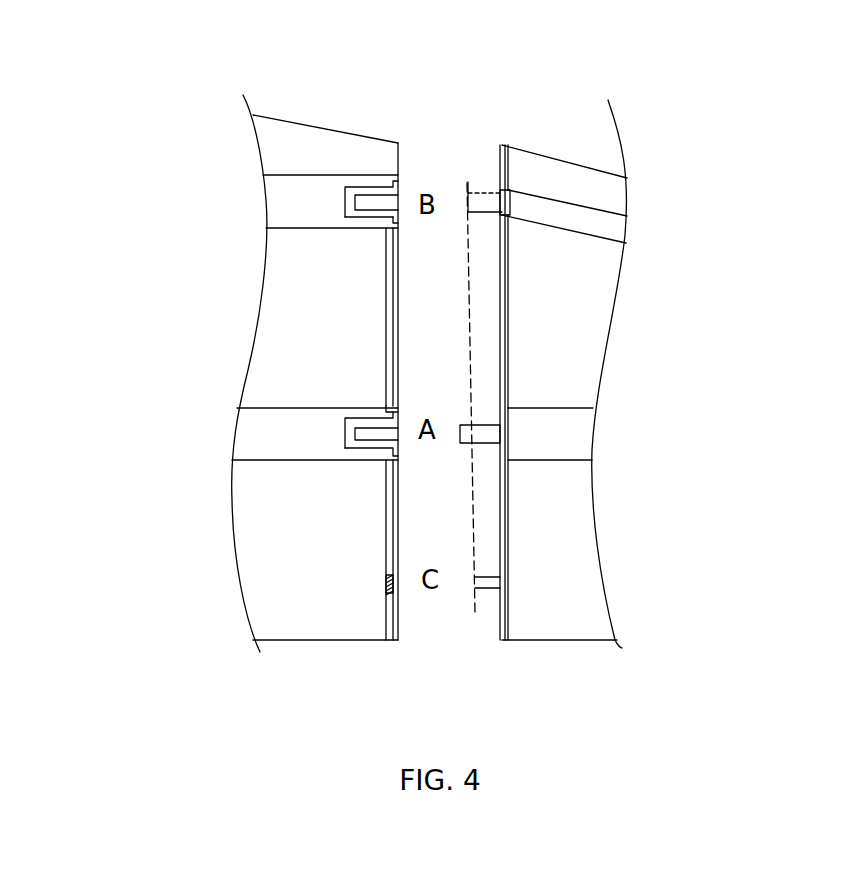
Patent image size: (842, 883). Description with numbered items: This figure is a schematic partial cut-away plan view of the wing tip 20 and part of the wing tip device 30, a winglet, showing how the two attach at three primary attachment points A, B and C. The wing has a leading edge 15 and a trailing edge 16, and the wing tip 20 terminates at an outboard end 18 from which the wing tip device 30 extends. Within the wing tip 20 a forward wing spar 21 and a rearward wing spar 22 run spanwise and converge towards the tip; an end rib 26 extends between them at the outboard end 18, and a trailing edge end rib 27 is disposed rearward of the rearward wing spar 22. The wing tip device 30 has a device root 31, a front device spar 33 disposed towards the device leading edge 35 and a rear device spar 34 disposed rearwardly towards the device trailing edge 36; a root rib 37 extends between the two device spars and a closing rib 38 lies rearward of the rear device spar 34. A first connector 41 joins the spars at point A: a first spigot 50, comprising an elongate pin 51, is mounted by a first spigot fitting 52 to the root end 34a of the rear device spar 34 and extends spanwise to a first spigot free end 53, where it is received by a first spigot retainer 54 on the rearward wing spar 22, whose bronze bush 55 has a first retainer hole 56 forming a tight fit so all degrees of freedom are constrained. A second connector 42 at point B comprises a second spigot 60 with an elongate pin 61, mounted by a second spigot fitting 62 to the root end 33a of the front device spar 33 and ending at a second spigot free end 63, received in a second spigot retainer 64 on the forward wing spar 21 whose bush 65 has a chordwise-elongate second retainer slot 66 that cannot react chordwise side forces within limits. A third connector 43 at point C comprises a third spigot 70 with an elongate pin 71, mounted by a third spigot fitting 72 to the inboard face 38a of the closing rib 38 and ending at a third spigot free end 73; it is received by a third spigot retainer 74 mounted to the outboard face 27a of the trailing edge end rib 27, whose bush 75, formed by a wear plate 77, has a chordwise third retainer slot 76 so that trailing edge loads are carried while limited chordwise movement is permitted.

The leading edge 15 is at (290, 118).
The trailing edge 16 is at (318, 642).
The outboard end 18 is at (370, 627).
The wing tip 20 is at (344, 91).
The forward wing spar 21 is at (283, 200).
The rearward wing spar 22 is at (243, 438).
The end rib 26 is at (385, 341).
The trailing edge end rib 27 is at (385, 511).
The outboard face 27a is at (398, 486).
The wing tip device 30 is at (572, 75).
The wing tip device root 31 is at (527, 630).
The front device spar 33 is at (613, 233).
The root end 33a is at (520, 205).
The rear device spar 34 is at (585, 428).
The root end 34a is at (523, 418).
The device leading edge 35 is at (573, 164).
The device trailing edge 36 is at (533, 642).
The root rib 37 is at (512, 283).
The closing rib 38 is at (508, 543).
The inboard face 38a is at (504, 622).
The first connector 41 is at (454, 390).
The second connector 42 is at (465, 152).
The third connector 43 is at (462, 641).
The first spigot 50 is at (500, 420).
The elongate pin 51 is at (482, 441).
The first spigot fitting 52 is at (507, 431).
The first spigot free end 53 is at (462, 430).
The first spigot retainer 54 is at (359, 401).
The bush 55 is at (393, 453).
The first retainer hole 56 is at (398, 414).
The second spigot 60 is at (488, 204).
The elongate pin 61 is at (478, 207).
The second spigot fitting 62 is at (512, 218).
The second spigot free end 63 is at (467, 205).
The second spigot retainer 64 is at (363, 153).
The bush 65 is at (397, 181).
The second retainer slot 66 is at (397, 203).
The third spigot 70 is at (483, 590).
The elongate pin 71 is at (488, 573).
The third spigot fitting 72 is at (510, 582).
The third spigot free end 73 is at (472, 596).
The third spigot retainer 74 is at (362, 558).
The bush 75 is at (394, 573).
The third retainer slot 76 is at (387, 582).
The wear plate 77 is at (398, 598).